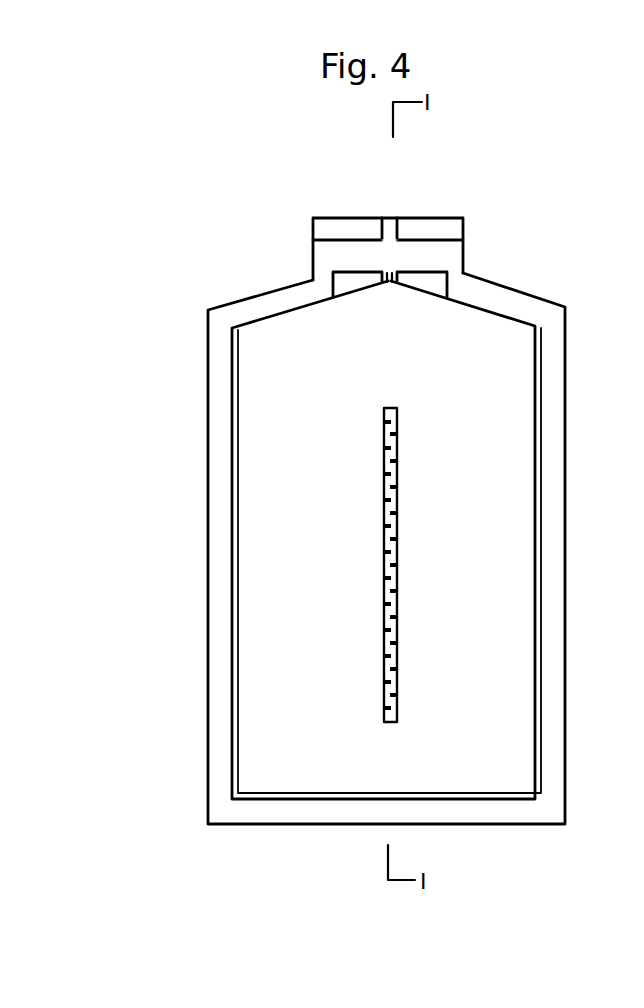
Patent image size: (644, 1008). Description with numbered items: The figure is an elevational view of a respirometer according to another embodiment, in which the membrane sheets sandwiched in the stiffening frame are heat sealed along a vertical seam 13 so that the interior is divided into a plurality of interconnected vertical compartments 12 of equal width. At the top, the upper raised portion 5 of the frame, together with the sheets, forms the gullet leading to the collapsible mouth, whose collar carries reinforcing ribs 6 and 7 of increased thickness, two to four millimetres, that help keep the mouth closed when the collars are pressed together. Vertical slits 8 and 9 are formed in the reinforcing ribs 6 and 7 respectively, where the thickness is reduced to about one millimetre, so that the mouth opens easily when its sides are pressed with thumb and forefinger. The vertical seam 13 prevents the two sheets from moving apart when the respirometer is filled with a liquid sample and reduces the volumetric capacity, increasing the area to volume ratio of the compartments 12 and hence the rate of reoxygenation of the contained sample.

The upper raised portion 5 is at (263, 303).
The reinforcing rib 6 is at (440, 228).
The reinforcing rib 7 is at (436, 285).
The vertical slit 8 is at (390, 228).
The vertical slit 9 is at (388, 283).
The interconnected vertical compartment 12 is at (265, 735).
The vertical seam 13 is at (397, 660).